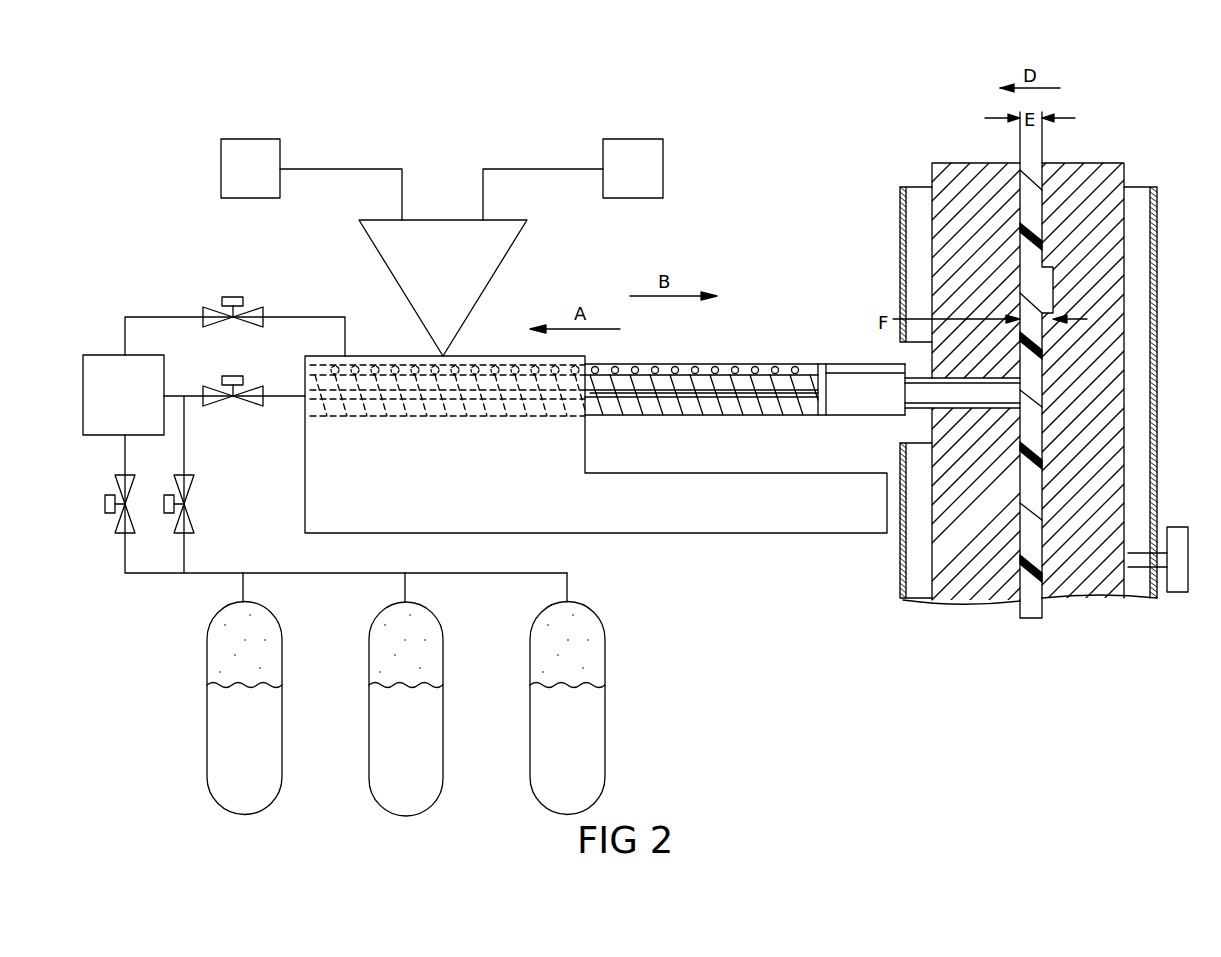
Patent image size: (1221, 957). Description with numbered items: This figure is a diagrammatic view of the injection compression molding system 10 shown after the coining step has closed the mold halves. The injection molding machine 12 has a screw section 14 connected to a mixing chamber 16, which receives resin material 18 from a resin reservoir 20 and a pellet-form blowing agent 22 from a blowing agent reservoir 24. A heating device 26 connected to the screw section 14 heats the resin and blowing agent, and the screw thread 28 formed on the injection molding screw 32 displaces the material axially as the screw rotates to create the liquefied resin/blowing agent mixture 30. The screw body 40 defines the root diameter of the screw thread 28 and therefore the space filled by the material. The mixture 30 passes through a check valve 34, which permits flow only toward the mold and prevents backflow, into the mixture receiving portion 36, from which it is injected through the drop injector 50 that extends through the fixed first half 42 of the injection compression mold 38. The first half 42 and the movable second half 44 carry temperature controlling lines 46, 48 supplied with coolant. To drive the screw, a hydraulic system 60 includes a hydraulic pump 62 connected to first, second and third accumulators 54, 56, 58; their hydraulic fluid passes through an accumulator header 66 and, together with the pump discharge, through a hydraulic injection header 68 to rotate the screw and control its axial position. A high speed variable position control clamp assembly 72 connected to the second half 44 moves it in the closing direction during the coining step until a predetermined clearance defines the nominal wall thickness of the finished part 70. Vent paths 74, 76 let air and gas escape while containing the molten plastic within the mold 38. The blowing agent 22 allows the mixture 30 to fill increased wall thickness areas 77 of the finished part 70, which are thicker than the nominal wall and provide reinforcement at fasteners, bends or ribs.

The injection compression molding system 10 is at (790, 148).
The injection molding machine 12 is at (548, 515).
The screw section 14 is at (808, 364).
The mixing chamber 16 is at (487, 275).
The resin material 18 is at (265, 185).
The resin reservoir 20 is at (258, 139).
The blowing agent 22 is at (650, 175).
The blowing agent reservoir 24 is at (630, 139).
The heating device 26 is at (385, 365).
The screw thread 28 is at (740, 364).
The resin/blowing agent mixture 30 is at (705, 416).
The injection molding screw 32 is at (820, 400).
The check valve 34 is at (822, 364).
The mixture receiving portion 36 is at (862, 405).
The injection compression mold 38 is at (915, 140).
The screw body 40 is at (755, 399).
The fixed first half 42 is at (990, 165).
The movable second half 44 is at (1110, 168).
The temperature controlling line 46 is at (912, 195).
The temperature controlling line 48 is at (1140, 195).
The drop injector 50 is at (922, 380).
The first accumulator 54 is at (605, 653).
The second accumulator 56 is at (443, 665).
The third accumulator 58 is at (282, 655).
The hydraulic system 60 is at (128, 214).
The hydraulic pump 62 is at (125, 355).
The accumulator header 66 is at (305, 573).
The hydraulic injection header 68 is at (288, 396).
The finished part 70 is at (1040, 607).
The variable position control clamp assembly 72 is at (1177, 592).
The vent path 74 is at (1011, 611).
The vent path 76 is at (1050, 156).
The increased wall thickness area 77 is at (1043, 268).